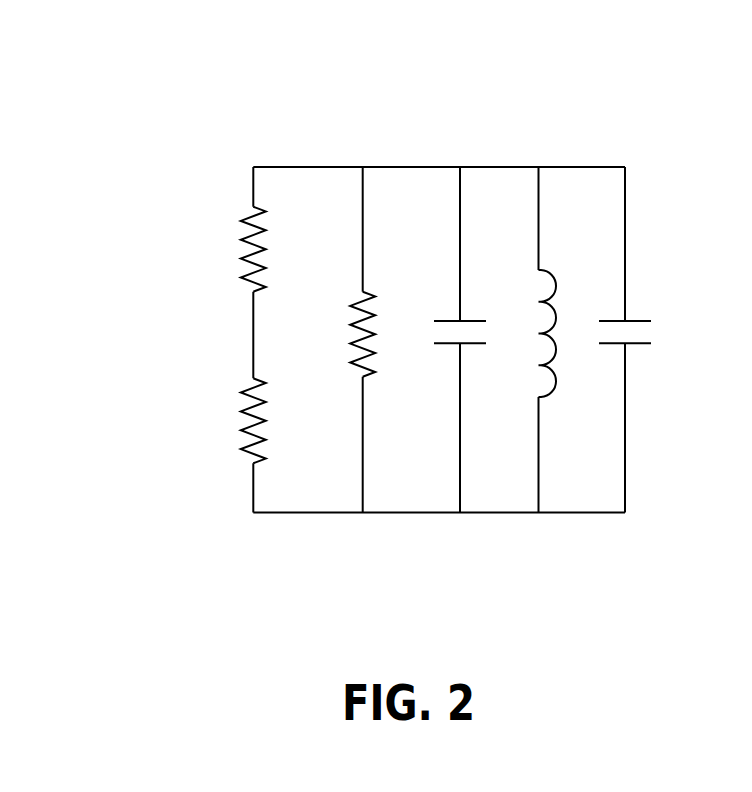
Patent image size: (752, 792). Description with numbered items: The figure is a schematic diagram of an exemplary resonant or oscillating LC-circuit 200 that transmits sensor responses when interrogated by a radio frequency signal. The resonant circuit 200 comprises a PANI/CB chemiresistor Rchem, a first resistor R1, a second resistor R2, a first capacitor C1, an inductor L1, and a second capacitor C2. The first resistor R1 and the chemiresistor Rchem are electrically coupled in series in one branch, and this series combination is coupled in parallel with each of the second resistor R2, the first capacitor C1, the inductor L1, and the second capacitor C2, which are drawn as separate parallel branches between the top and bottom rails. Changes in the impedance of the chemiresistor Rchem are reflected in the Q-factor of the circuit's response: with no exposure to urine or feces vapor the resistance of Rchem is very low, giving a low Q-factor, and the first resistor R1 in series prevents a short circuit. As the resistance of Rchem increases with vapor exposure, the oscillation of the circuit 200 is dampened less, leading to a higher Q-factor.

The resonant LC-circuit 200 is at (186, 99).
The first resistor R1 is at (274, 249).
The PANI/CB chemiresistor Rchem is at (294, 420).
The second resistor R2 is at (385, 334).
The first capacitor C1 is at (479, 340).
The inductor L1 is at (566, 333).
The second capacitor C2 is at (647, 340).